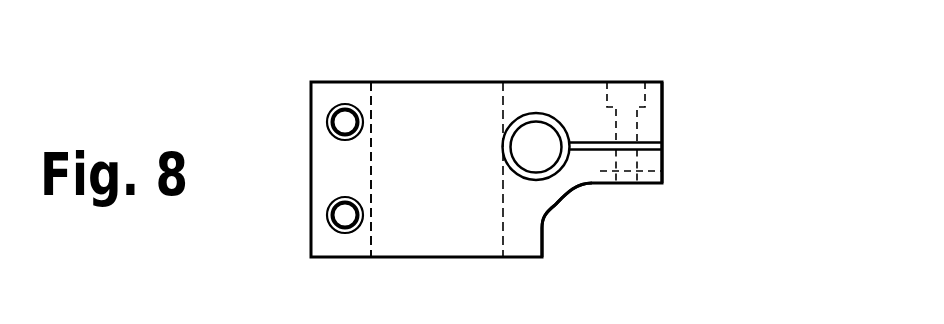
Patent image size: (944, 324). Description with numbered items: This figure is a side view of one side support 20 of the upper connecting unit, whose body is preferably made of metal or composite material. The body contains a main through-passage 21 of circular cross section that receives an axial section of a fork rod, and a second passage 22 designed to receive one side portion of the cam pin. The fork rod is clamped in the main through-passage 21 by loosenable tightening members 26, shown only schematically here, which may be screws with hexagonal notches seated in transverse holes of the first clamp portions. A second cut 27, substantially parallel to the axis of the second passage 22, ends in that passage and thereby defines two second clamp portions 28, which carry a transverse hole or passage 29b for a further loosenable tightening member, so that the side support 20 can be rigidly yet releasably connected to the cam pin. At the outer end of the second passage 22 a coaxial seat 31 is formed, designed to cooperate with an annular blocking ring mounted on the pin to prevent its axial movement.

The side support 20 is at (268, 70).
The main through-passage 21 is at (376, 233).
The second passage 22 is at (546, 121).
The tightening members 26 is at (327, 123).
The second cut 27 is at (662, 147).
The second clamp portions 28 is at (662, 100).
The passage 29b is at (633, 92).
The seat 31 is at (552, 165).